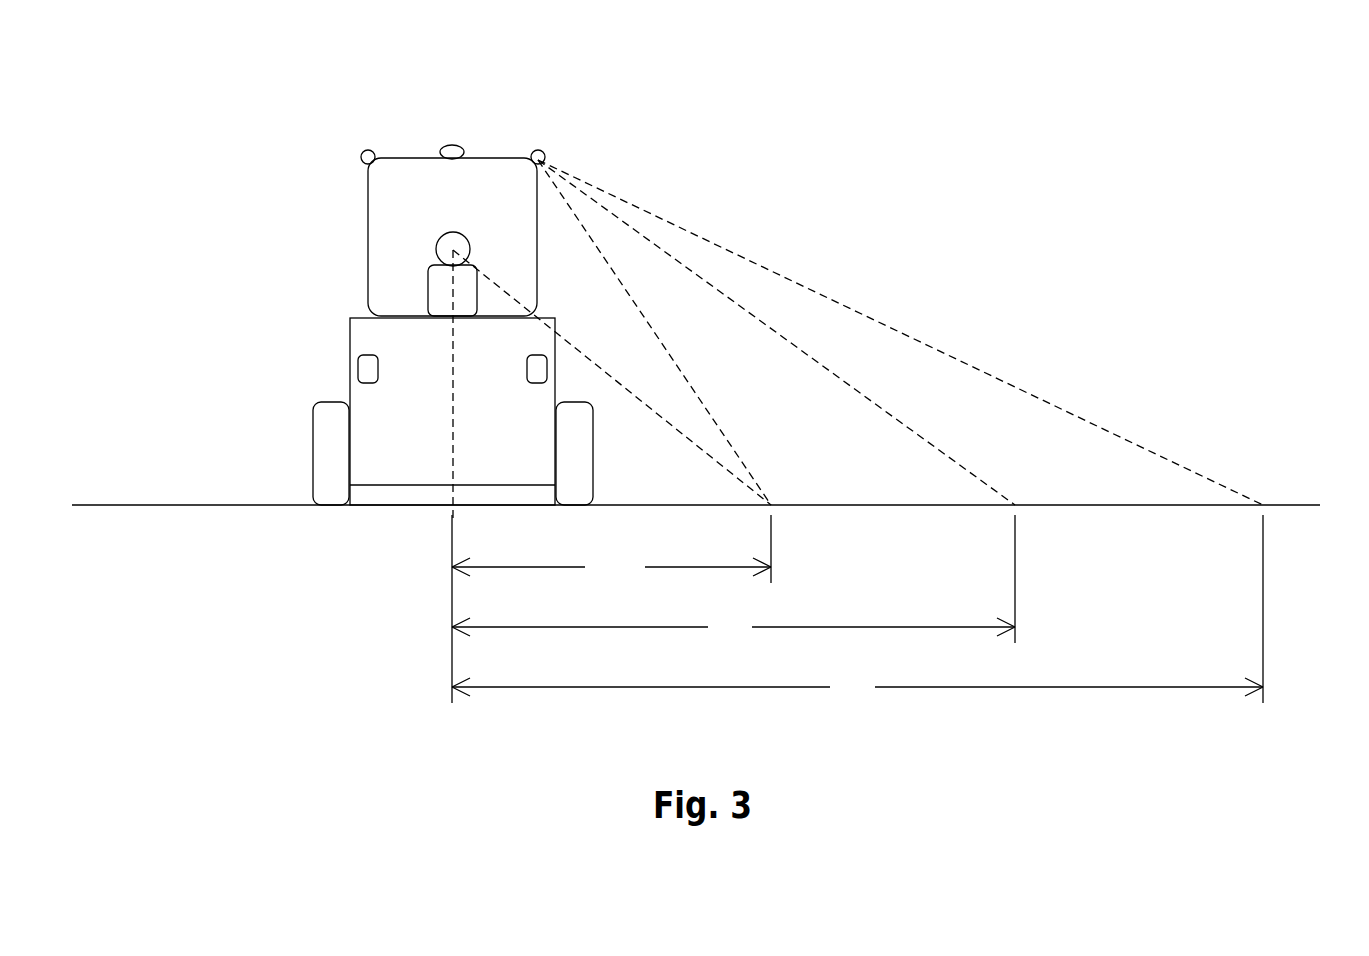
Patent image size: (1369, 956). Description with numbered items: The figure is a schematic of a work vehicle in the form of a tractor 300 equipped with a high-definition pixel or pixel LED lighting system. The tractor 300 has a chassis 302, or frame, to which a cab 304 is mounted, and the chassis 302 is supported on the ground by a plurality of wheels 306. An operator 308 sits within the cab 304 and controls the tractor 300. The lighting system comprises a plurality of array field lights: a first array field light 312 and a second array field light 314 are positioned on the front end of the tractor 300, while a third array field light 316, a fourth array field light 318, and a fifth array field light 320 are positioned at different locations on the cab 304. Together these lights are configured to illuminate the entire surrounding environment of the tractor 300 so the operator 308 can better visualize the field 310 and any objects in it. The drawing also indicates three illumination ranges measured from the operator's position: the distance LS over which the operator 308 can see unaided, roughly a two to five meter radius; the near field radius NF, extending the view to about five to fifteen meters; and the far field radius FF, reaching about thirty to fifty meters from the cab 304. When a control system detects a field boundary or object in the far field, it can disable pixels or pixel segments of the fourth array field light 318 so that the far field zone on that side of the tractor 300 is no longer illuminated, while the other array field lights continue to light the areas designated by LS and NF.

The tractor 300 is at (175, 158).
The chassis 302 is at (348, 337).
The cab 304 is at (368, 237).
The wheels 306 is at (312, 468).
The operator 308 is at (482, 254).
The field 310 is at (98, 506).
The first array field light 312 is at (358, 370).
The second array field light 314 is at (536, 353).
The third array field light 316 is at (452, 145).
The fourth array field light 318 is at (546, 156).
The fifth array field light 320 is at (361, 157).